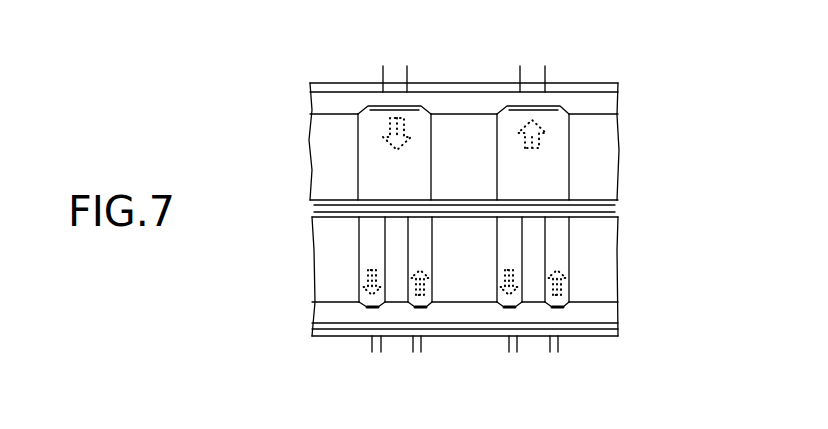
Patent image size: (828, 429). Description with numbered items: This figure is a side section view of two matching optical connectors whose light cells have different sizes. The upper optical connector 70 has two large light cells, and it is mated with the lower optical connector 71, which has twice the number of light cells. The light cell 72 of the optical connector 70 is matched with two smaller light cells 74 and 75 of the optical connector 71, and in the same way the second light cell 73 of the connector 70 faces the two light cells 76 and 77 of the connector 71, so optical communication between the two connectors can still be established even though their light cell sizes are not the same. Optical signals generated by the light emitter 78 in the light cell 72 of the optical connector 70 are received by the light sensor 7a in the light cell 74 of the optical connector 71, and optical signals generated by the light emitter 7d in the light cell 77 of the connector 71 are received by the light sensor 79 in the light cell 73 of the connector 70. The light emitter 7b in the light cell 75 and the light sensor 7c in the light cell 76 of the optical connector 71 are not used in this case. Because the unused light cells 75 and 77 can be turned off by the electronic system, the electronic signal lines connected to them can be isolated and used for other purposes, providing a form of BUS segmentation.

The optical connector 70 is at (310, 103).
The optical connector 71 is at (312, 316).
The light cell 72 is at (358, 167).
The light cell 73 is at (569, 160).
The light cell 74 is at (359, 254).
The light cell 75 is at (432, 238).
The light cell 76 is at (497, 277).
The light cell 77 is at (569, 257).
The light emitter 78 is at (413, 107).
The light sensor 79 is at (552, 107).
The light sensor 7a is at (372, 309).
The light emitter 7b is at (420, 309).
The light sensor 7c is at (509, 309).
The light emitter 7d is at (557, 309).